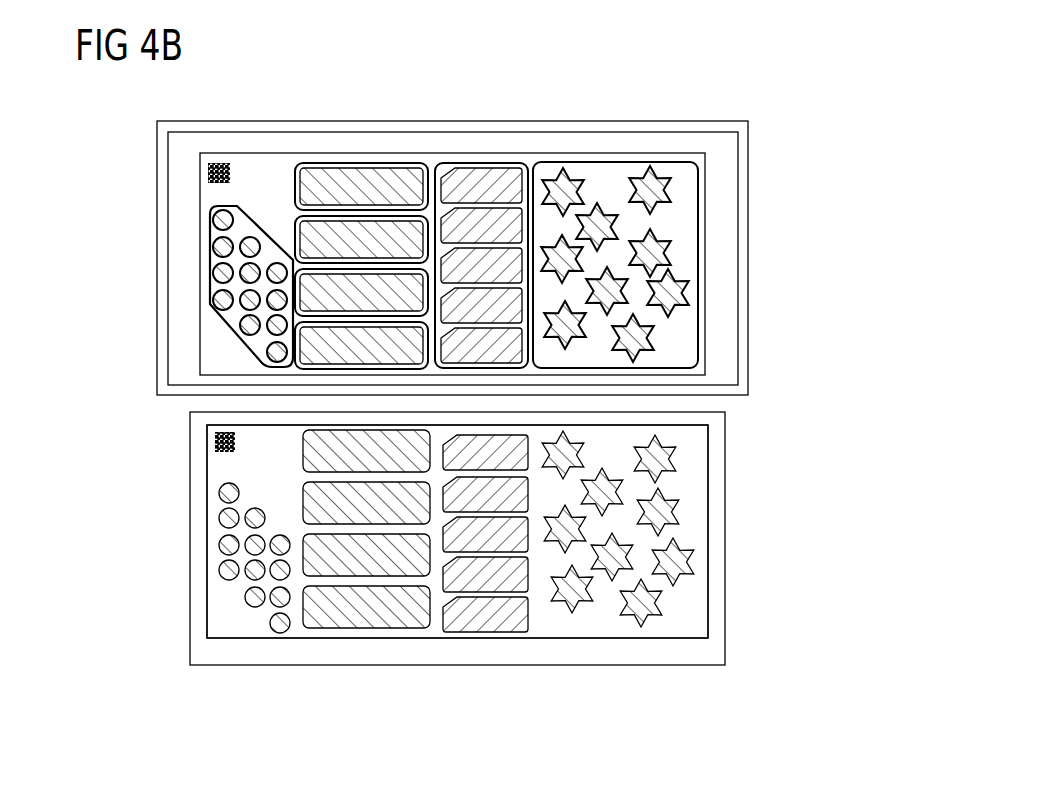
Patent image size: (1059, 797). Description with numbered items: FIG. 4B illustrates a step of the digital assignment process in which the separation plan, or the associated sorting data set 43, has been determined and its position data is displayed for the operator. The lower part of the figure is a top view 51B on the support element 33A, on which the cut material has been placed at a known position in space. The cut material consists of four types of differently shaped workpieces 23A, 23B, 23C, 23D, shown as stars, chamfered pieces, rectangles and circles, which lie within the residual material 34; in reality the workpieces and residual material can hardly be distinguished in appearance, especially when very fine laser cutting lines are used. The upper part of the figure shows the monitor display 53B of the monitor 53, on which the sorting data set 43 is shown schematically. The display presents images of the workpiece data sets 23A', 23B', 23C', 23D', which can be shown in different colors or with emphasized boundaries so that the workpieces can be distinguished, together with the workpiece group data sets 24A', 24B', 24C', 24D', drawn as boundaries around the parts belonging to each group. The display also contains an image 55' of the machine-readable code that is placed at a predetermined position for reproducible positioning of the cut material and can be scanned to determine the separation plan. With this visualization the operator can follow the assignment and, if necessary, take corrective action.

The sorting data set 43 is at (141, 156).
The monitor 53 is at (738, 242).
The monitor display 53B is at (703, 214).
The image of the machine-readable code 55' is at (225, 133).
The workpiece data set 23A' is at (615, 222).
The workpiece data set 23B' is at (480, 223).
The workpiece data set 23C' is at (361, 223).
The workpiece data set 23D' is at (191, 286).
The workpiece group data set 24A' is at (615, 224).
The workpiece group data set 24B' is at (489, 224).
The workpiece group data set 24C' is at (361, 224).
The workpiece group data set 24D' is at (194, 286).
The top view 51B is at (758, 537).
The support element 33A is at (730, 605).
The residual material 34 is at (697, 460).
The workpiece 23A is at (618, 571).
The workpiece 23B is at (485, 573).
The workpiece 23C is at (366, 570).
The workpiece 23D is at (258, 597).